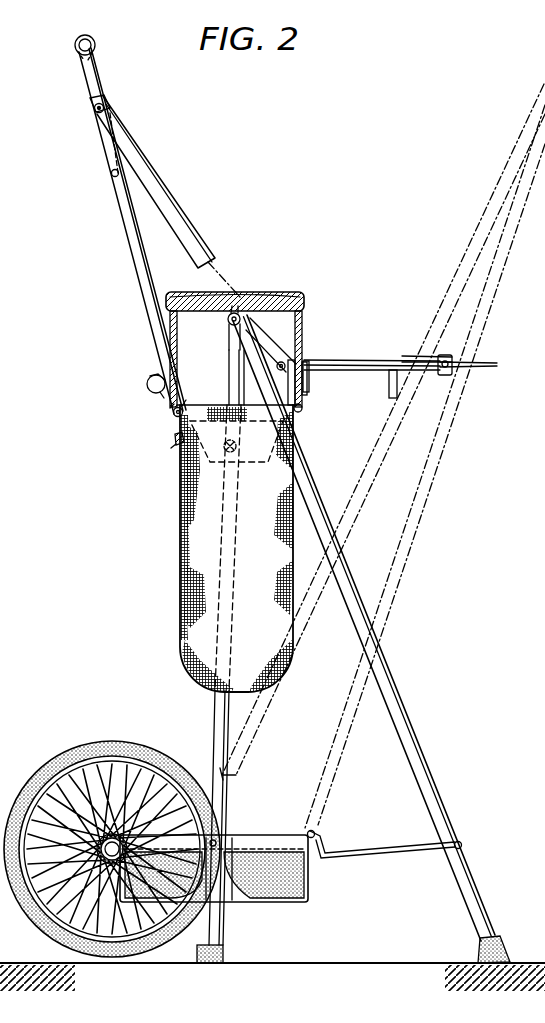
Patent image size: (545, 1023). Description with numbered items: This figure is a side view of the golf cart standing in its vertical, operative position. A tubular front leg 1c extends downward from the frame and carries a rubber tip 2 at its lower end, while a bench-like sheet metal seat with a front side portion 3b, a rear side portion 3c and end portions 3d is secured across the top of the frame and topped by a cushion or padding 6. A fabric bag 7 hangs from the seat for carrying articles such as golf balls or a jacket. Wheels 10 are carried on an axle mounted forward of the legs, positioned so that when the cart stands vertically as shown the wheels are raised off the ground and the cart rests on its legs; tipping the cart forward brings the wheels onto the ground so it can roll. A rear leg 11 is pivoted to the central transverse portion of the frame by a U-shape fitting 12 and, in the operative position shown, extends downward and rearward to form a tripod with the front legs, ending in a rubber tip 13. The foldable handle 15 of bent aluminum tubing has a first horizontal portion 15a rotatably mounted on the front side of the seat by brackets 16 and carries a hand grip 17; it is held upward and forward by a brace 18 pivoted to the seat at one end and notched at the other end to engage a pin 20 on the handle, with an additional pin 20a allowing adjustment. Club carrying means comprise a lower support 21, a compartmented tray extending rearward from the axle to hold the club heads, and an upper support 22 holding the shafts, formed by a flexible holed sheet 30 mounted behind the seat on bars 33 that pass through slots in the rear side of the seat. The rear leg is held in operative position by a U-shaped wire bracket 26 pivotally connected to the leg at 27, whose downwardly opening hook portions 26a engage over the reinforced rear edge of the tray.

The hand grip 17 is at (74, 47).
The pin 20 is at (94, 110).
The additional pin 20a is at (110, 173).
The brace 18 is at (157, 181).
The handle 15 is at (120, 222).
The cushion or padding 6 is at (252, 294).
The sheet 30 is at (292, 318).
The rear side portion 3c is at (304, 344).
The front side portion 3b is at (168, 334).
The U-shape fitting 12 is at (228, 321).
The brackets 16 is at (148, 380).
The first horizontal portion 15a is at (174, 410).
The end portions 3d is at (176, 430).
The fabric bag 7 is at (174, 607).
The front leg portion 1c is at (212, 710).
The wheels 10 is at (115, 747).
The rear leg 11 is at (433, 779).
The bars 33 is at (354, 372).
The upper support 22 is at (489, 367).
The lower support 21 is at (311, 896).
The U-shaped bracket 26 is at (402, 857).
The hook portions 26a is at (318, 836).
The pivotal connection 27 is at (460, 843).
The rubber feet or tips 2 is at (222, 957).
The rubber tip 13 is at (501, 955).